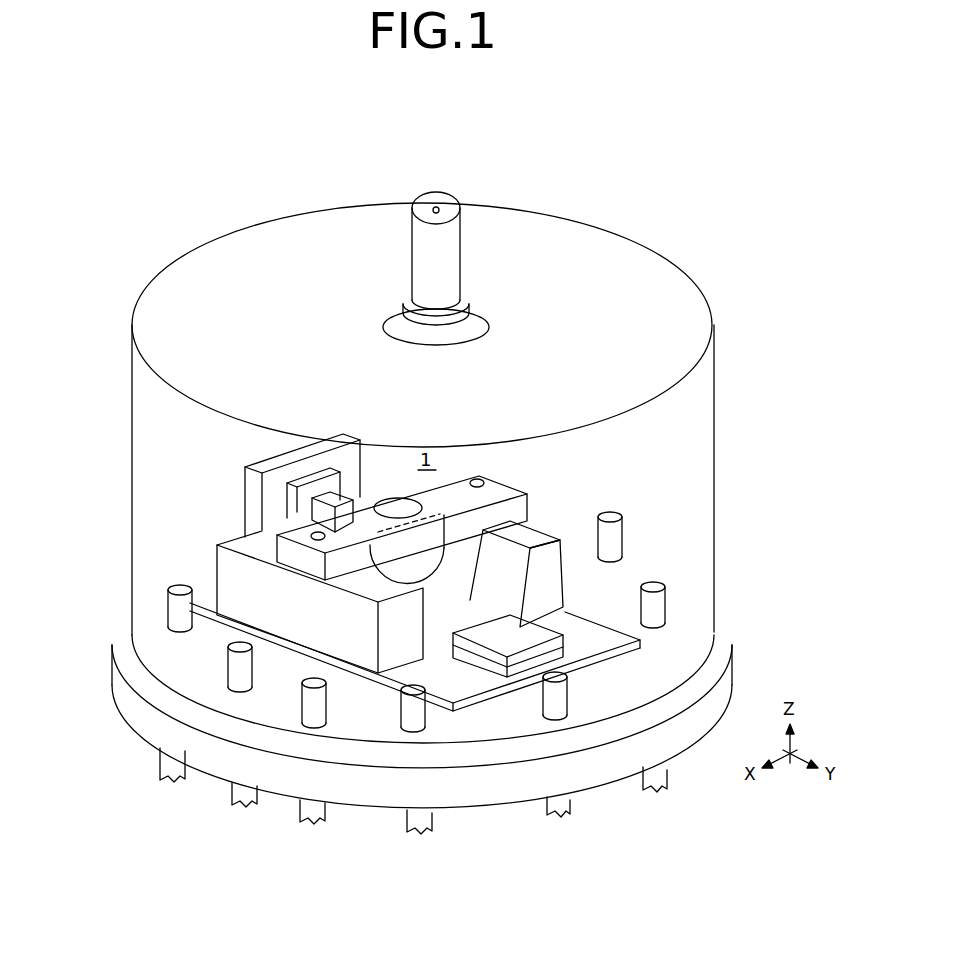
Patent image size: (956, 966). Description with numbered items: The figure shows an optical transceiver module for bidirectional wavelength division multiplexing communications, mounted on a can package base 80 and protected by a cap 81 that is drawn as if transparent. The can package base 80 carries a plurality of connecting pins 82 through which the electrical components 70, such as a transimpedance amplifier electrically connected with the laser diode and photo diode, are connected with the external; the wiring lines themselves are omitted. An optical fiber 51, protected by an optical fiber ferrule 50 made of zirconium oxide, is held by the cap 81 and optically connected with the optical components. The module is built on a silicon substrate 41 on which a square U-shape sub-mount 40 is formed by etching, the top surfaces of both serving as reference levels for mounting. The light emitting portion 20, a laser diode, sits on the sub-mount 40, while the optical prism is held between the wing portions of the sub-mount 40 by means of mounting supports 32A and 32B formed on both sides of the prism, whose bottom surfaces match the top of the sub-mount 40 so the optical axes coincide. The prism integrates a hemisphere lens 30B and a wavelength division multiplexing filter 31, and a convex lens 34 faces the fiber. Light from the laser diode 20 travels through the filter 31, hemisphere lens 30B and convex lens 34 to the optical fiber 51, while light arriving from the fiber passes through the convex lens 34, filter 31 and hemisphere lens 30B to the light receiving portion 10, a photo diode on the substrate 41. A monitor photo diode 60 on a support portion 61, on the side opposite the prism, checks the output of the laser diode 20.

The light receiving portion 10 is at (560, 577).
The light emitting portion 20 is at (302, 453).
The hemisphere lens 30B is at (470, 530).
The wavelength division multiplexing filter 31 is at (527, 490).
The mounting support 32A is at (297, 530).
The mounting support 32B is at (500, 480).
The convex lens 34 is at (397, 500).
The square U-shape sub-mount 40 is at (227, 588).
The substrate 41 is at (472, 683).
The optical fiber ferrule 50 is at (450, 248).
The optical fiber 51 is at (438, 206).
The monitor photo diode 60 is at (325, 473).
The support portion 61 is at (332, 497).
The electrical components 70 is at (523, 640).
The can package base 80 is at (725, 626).
The cap 81 is at (680, 297).
The connecting pins 82 is at (180, 617).